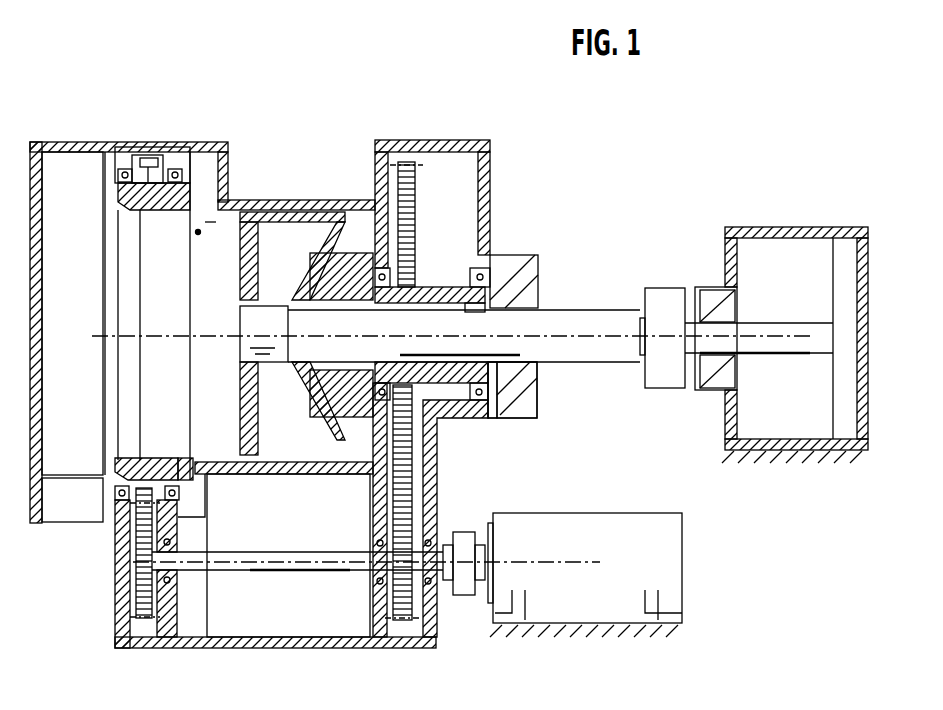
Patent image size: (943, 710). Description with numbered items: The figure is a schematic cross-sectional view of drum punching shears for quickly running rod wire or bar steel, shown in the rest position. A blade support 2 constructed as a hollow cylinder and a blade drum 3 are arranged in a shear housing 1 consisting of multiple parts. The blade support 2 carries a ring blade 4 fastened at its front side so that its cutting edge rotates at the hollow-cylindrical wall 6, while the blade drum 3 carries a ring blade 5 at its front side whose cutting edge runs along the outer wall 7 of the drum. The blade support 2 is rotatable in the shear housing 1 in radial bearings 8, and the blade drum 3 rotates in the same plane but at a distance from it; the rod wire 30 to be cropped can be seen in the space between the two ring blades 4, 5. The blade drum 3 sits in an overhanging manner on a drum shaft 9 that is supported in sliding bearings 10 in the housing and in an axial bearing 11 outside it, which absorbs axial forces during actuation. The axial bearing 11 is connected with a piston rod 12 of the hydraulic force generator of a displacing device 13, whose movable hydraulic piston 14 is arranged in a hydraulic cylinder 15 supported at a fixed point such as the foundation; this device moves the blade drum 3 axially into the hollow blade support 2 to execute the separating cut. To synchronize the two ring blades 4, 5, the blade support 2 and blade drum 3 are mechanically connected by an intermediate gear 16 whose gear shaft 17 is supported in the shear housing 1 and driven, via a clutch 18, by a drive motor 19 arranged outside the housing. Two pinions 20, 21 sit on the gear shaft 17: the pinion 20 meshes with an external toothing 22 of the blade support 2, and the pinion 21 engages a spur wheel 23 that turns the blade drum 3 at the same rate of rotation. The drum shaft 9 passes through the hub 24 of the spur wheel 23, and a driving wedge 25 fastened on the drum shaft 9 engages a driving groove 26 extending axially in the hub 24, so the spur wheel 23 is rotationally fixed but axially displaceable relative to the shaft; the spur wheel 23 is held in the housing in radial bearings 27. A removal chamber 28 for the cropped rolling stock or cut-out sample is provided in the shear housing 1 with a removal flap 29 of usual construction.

The shear housing 1 is at (42, 390).
The blade support 2 is at (147, 164).
The blade drum 3 is at (325, 200).
The ring blade 4 is at (186, 166).
The ring blade 5 is at (262, 208).
The hollow-cylindrical wall 6 is at (168, 212).
The outer wall 7 is at (240, 398).
The radial bearings 8 is at (122, 166).
The drum shaft 9 is at (590, 322).
The sliding bearings 10 is at (345, 280).
The axial bearing 11 is at (665, 304).
The piston rod 12 is at (752, 320).
The displacing device 13 is at (701, 430).
The hydraulic piston 14 is at (845, 308).
The hydraulic cylinder 15 is at (848, 451).
The intermediate gear 16 is at (290, 616).
The gear shaft 17 is at (328, 575).
The clutch 18 is at (462, 600).
The drive motor 19 is at (668, 535).
The pinion 20 is at (150, 626).
The pinion 21 is at (400, 626).
The external toothing 22 is at (128, 530).
The spur wheel 23 is at (412, 482).
The hub 24 is at (462, 404).
The driving wedge 25 is at (470, 290).
The driving groove 26 is at (440, 272).
The radial bearings 27 is at (495, 408).
The removal chamber 28 is at (77, 172).
The removal flap 29 is at (70, 524).
The rod wire 30 is at (207, 222).